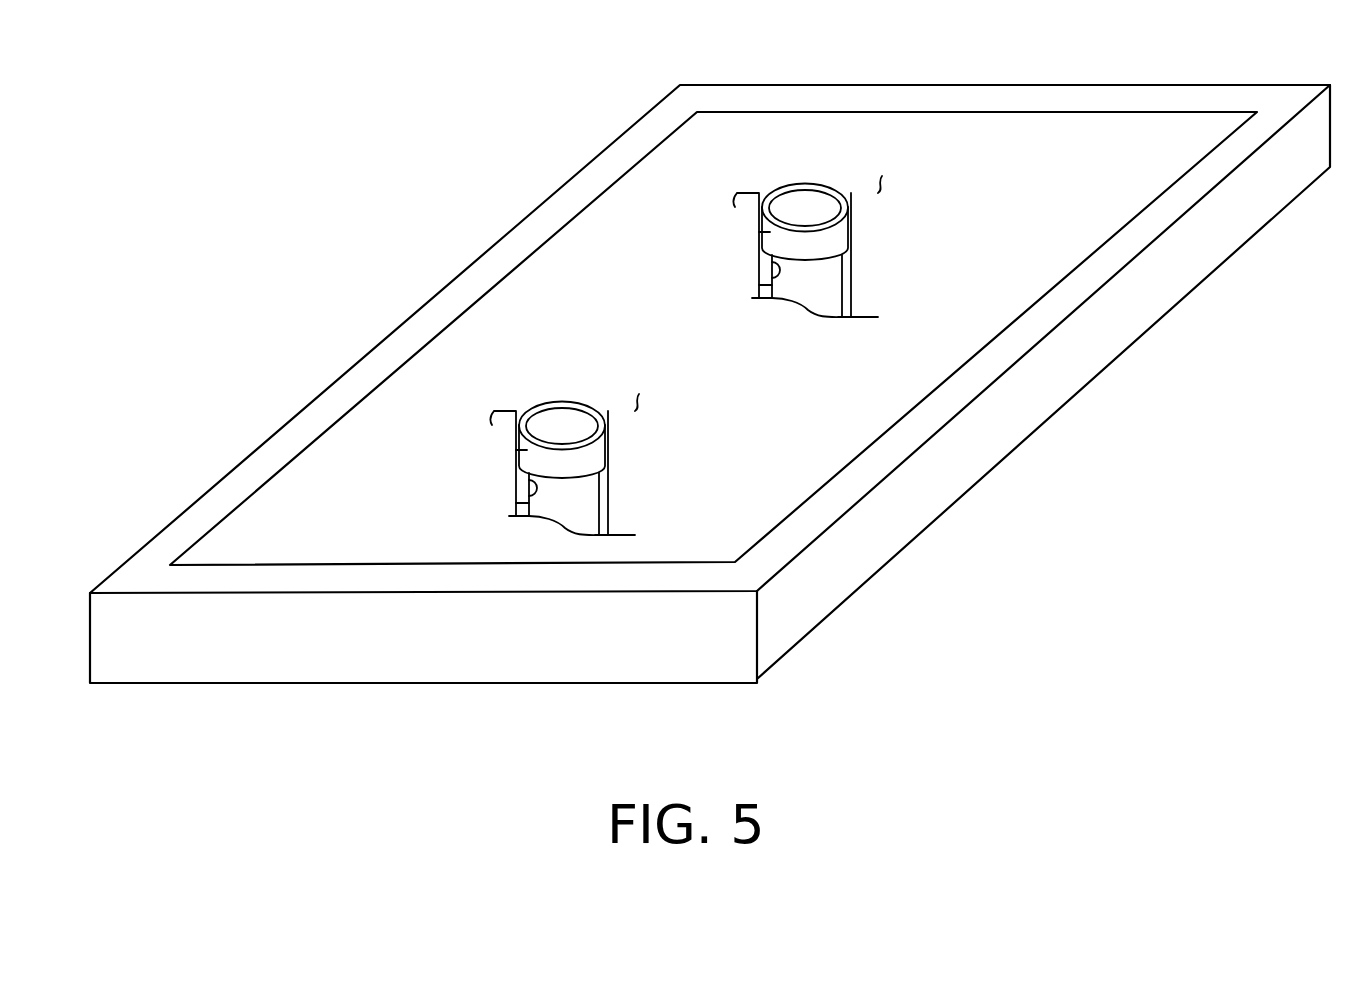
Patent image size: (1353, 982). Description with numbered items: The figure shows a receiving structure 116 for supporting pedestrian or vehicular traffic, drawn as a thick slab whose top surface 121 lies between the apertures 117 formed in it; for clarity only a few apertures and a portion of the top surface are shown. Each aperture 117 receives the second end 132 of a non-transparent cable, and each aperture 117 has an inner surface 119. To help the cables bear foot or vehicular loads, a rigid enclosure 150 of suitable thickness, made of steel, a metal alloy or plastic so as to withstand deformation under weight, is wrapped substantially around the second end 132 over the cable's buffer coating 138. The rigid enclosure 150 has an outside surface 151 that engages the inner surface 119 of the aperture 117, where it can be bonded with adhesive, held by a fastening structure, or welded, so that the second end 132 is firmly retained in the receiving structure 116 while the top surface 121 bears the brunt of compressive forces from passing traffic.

The receiving structure 116 is at (380, 647).
The aperture 117 is at (830, 170).
The top surface 121 is at (737, 193).
The rigid enclosure 150 is at (843, 238).
The outside surface 151 is at (767, 233).
The second end 132 is at (830, 285).
The inner surface 119 is at (760, 267).
The buffer coating 138 is at (765, 285).